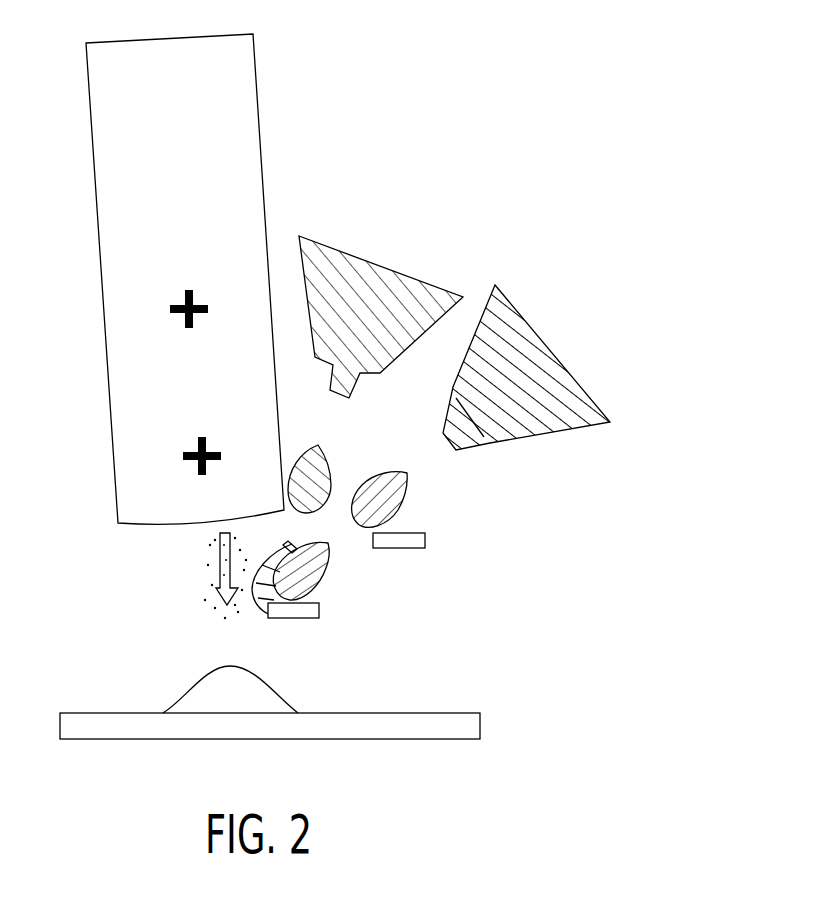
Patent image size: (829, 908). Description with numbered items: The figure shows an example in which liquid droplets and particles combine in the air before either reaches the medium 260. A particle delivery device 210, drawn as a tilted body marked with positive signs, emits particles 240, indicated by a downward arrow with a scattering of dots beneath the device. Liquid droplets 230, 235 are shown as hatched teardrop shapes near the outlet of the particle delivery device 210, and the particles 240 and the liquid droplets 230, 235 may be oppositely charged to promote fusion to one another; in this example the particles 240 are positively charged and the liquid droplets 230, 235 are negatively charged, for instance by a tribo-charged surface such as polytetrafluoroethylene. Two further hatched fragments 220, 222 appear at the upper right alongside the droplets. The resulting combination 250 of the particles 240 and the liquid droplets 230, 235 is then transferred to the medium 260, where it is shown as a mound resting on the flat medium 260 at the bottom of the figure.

The particle delivery device 210 is at (105, 153).
The first charged particle fragment 220 is at (338, 260).
The second charged particle fragment 222 is at (522, 325).
The liquid droplet 230 is at (328, 457).
The liquid droplet 235 is at (405, 492).
The particles 240 is at (212, 572).
The combination 250 is at (270, 695).
The medium 260 is at (463, 720).